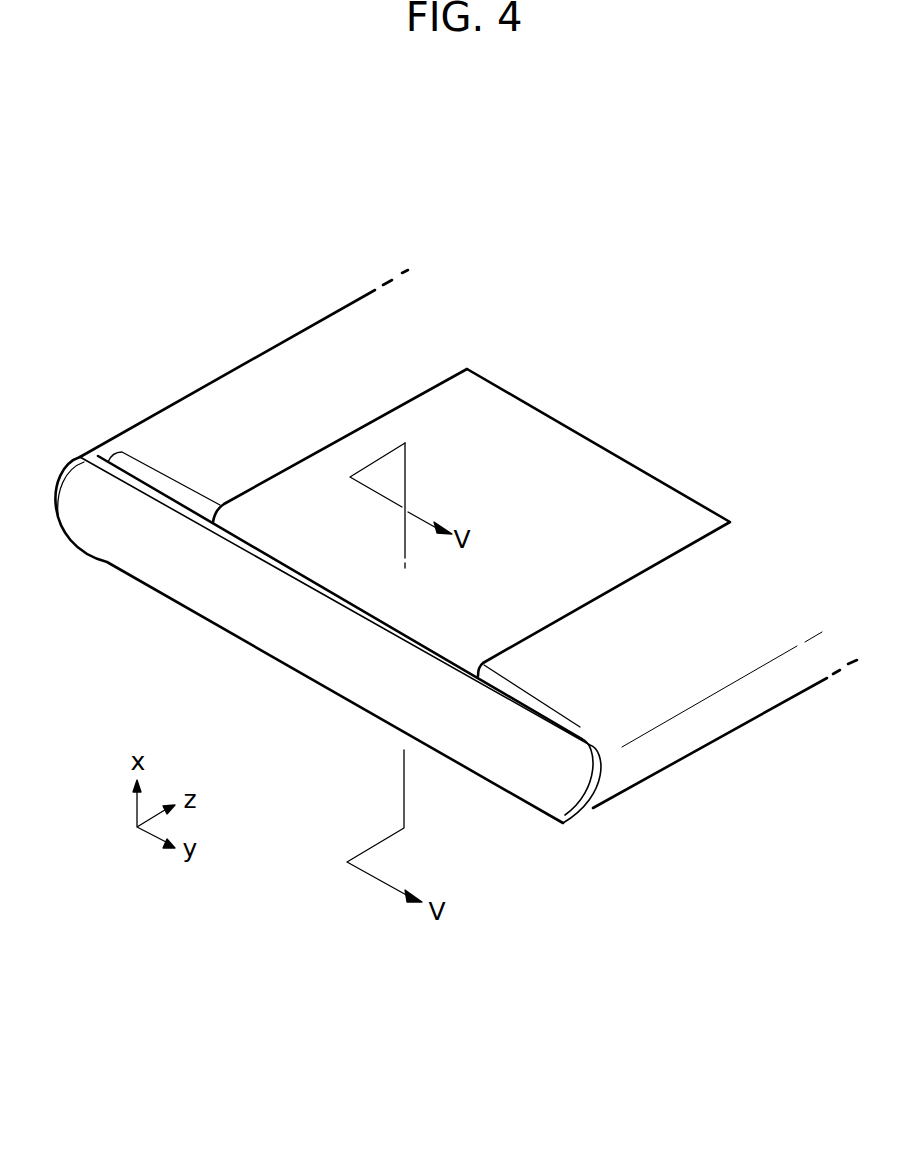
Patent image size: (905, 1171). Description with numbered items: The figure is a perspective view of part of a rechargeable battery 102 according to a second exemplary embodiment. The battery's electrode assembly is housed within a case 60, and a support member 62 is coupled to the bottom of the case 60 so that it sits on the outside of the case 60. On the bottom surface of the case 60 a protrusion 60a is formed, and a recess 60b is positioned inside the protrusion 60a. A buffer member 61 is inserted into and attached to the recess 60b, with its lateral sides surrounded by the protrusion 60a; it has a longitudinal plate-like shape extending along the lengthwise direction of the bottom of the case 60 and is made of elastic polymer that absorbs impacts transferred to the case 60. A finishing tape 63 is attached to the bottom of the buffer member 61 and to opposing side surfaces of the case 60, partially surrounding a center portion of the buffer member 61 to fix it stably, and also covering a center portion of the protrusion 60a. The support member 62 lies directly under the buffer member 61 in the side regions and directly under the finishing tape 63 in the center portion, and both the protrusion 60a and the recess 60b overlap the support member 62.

The rechargeable battery 102 is at (485, 201).
The case 60 is at (268, 363).
The protrusion 60a is at (600, 758).
The recess 60b is at (573, 722).
The buffer member 61 is at (153, 487).
The support member 62 is at (218, 608).
The finishing tape 63 is at (623, 568).